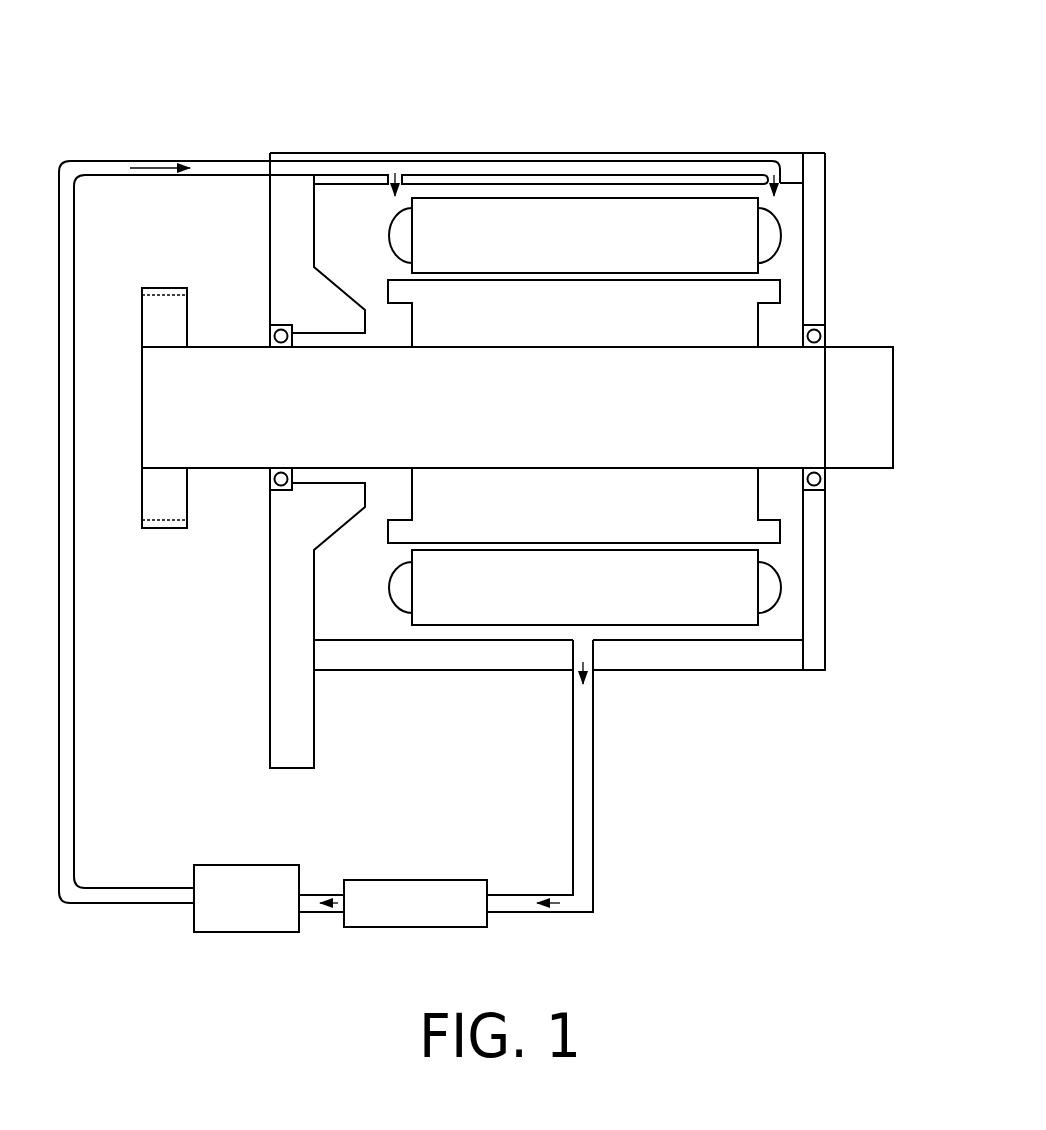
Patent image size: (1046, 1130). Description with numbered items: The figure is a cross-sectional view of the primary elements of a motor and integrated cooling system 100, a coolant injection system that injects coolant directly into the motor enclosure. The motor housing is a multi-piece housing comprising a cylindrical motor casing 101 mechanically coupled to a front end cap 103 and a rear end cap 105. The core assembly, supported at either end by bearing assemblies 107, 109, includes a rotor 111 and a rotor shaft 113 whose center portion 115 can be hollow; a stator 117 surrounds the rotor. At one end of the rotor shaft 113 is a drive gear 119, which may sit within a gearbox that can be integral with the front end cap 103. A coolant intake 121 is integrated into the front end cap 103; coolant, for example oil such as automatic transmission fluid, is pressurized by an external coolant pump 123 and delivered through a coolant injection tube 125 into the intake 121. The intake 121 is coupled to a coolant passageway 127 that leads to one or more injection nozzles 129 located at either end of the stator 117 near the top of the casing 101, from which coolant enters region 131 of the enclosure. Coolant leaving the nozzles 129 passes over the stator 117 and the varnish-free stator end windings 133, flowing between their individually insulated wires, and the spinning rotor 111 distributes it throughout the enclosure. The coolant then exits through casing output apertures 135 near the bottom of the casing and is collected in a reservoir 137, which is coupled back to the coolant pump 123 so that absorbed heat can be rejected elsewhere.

The motor and integrated cooling system 100 is at (283, 73).
The cylindrical motor casing 101 is at (475, 153).
The front end cap 103 is at (285, 287).
The rear end cap 105 is at (810, 198).
The bearing assembly 107 is at (273, 337).
The bearing assembly 109 is at (827, 337).
The rotor 111 is at (541, 322).
The rotor shaft 113 is at (860, 450).
The center portion 115 is at (541, 415).
The stator 117 is at (541, 241).
The drive gear 119 is at (155, 318).
The coolant intake 121 is at (262, 161).
The coolant pump 123 is at (252, 932).
The coolant injection tube 125 is at (78, 712).
The coolant passageway 127 is at (557, 161).
The injection nozzles 129 is at (375, 190).
The region 131 is at (340, 262).
The stator end windings 133 is at (370, 229).
The casing output apertures 135 is at (605, 658).
The reservoir 137 is at (402, 927).